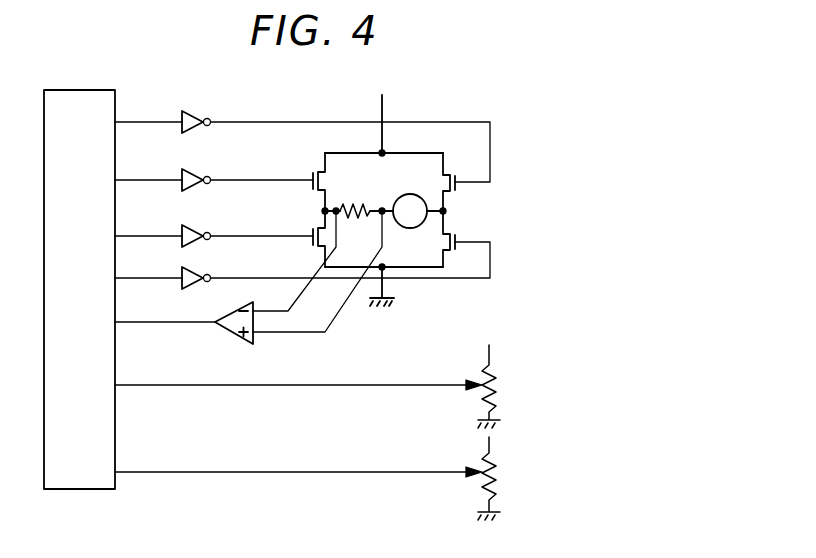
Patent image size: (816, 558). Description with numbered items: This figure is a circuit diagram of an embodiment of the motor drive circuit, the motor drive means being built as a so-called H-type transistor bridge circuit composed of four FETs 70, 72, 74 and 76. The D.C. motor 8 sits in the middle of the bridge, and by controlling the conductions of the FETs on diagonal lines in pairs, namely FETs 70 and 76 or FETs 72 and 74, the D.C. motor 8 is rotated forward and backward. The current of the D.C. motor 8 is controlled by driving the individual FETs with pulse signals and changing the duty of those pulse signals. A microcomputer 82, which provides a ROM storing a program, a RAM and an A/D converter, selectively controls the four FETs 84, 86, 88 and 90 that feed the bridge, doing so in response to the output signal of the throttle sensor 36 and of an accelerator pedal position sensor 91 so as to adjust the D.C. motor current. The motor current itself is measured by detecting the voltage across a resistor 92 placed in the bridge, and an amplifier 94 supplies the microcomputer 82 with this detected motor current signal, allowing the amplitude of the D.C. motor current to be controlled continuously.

The microcomputer 82 is at (84, 89).
The FET 84 is at (178, 115).
The FET 86 is at (178, 173).
The FET 88 is at (178, 229).
The FET 90 is at (178, 271).
The FET 70 is at (316, 171).
The FET 72 is at (316, 228).
The FET 74 is at (455, 181).
The FET 76 is at (455, 239).
The resistor 92 is at (358, 208).
The D.C. motor 8 is at (411, 194).
The amplifier 94 is at (235, 341).
The throttle sensor 36 is at (480, 383).
The accelerator pedal position sensor 91 is at (478, 471).